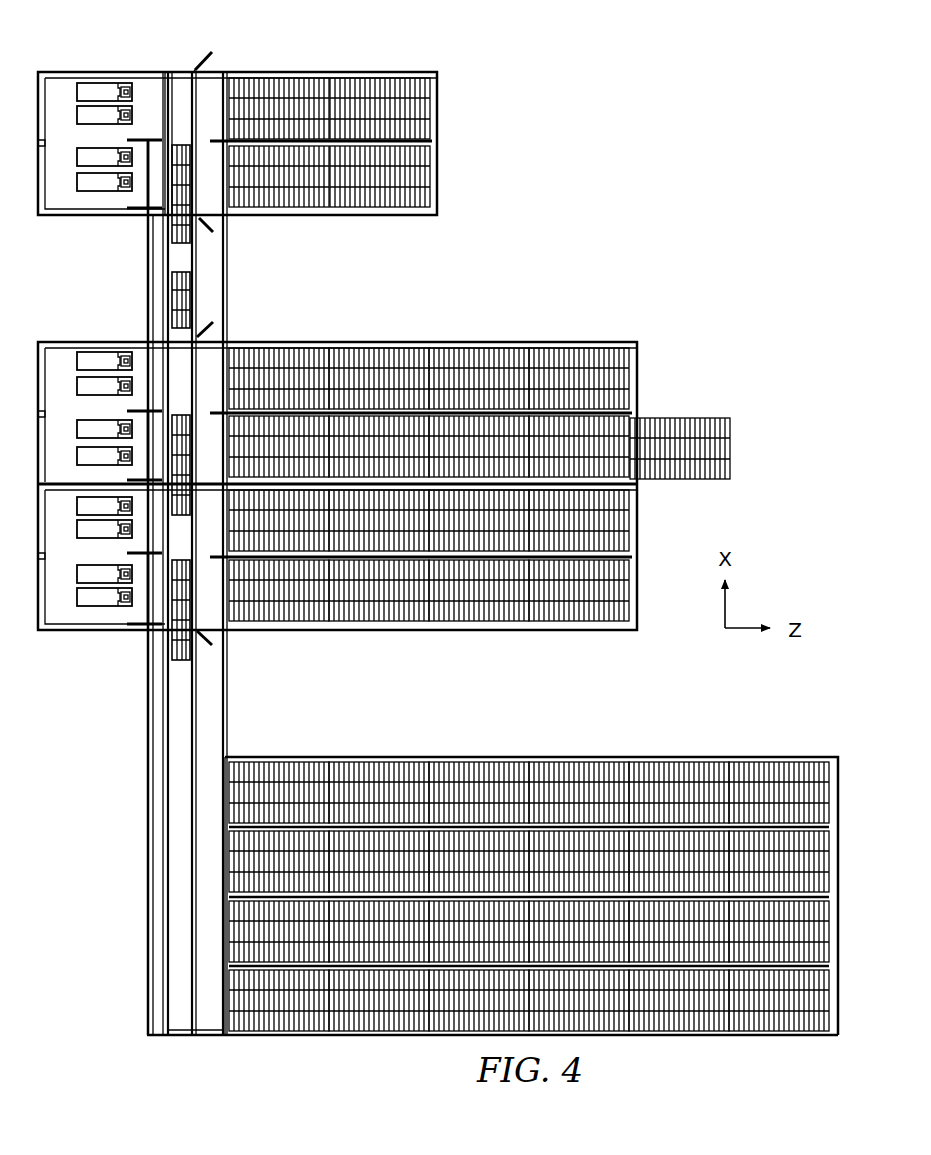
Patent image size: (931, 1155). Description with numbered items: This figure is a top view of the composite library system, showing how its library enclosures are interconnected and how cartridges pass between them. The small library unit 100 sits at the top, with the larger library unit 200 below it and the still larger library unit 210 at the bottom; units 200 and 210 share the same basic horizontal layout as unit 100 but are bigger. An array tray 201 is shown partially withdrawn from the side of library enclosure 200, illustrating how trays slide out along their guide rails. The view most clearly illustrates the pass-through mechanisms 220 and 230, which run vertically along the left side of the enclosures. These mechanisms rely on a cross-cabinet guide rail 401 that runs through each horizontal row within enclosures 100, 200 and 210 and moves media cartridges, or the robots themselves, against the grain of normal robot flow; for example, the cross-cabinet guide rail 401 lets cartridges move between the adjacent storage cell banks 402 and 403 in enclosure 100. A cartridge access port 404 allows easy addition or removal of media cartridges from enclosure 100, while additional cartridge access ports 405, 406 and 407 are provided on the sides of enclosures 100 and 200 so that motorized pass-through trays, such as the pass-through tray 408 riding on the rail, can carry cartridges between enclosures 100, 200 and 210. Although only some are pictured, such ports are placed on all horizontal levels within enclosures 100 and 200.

The library unit 100 is at (271, 115).
The library unit 200 is at (587, 342).
The array tray 201 is at (700, 418).
The library unit 210 is at (700, 756).
The pass-through mechanism 220 is at (148, 697).
The pass-through mechanism 230 is at (228, 273).
The cross-cabinet guide rail 401 is at (165, 93).
The storage cell bank 402 is at (433, 106).
The storage cell bank 403 is at (433, 176).
The cartridge access port 404 is at (198, 66).
The cartridge access port 405 is at (215, 220).
The cartridge access port 406 is at (210, 334).
The cartridge access port 407 is at (212, 638).
The motorized pass-through tray 408 is at (172, 300).